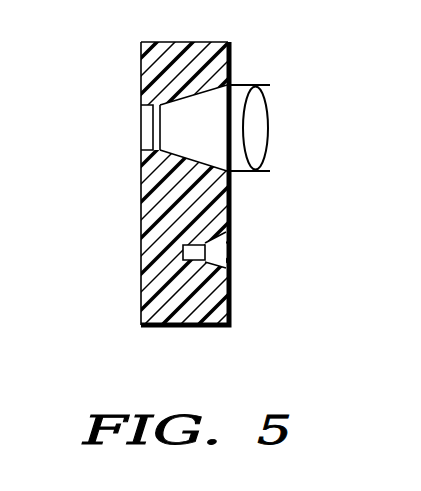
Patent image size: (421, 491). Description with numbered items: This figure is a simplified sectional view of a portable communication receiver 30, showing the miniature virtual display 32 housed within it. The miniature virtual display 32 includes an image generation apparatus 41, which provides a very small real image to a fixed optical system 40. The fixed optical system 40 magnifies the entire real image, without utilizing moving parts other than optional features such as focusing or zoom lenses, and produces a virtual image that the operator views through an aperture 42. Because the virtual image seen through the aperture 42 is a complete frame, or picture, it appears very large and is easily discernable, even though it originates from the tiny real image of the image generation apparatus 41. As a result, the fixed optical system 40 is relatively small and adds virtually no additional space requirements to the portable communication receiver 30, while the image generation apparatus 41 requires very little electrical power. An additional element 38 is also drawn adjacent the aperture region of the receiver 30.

The portable communication receiver 30 is at (187, 47).
The miniature virtual display 32 is at (97, 322).
The detector 38 is at (218, 252).
The fixed optical system 40 is at (240, 173).
The image generation apparatus 41 is at (153, 127).
The aperture 42 is at (273, 117).